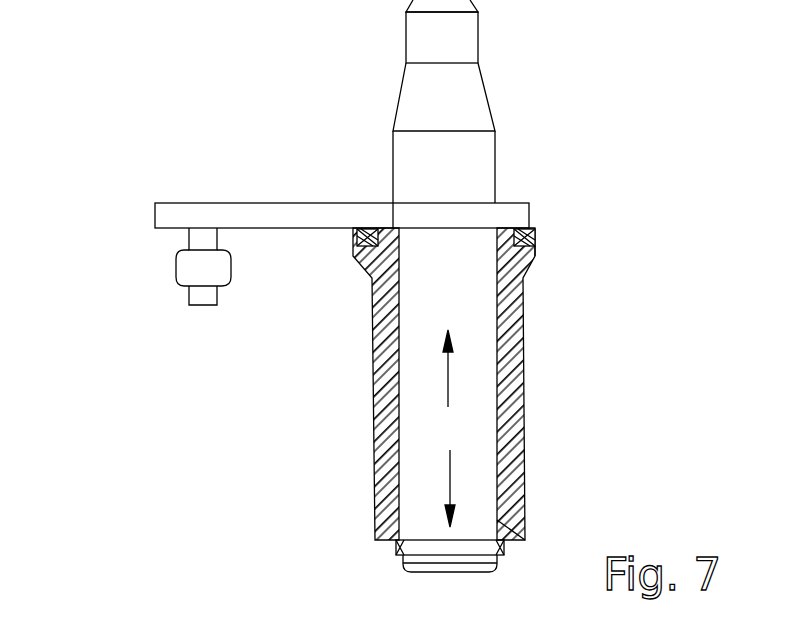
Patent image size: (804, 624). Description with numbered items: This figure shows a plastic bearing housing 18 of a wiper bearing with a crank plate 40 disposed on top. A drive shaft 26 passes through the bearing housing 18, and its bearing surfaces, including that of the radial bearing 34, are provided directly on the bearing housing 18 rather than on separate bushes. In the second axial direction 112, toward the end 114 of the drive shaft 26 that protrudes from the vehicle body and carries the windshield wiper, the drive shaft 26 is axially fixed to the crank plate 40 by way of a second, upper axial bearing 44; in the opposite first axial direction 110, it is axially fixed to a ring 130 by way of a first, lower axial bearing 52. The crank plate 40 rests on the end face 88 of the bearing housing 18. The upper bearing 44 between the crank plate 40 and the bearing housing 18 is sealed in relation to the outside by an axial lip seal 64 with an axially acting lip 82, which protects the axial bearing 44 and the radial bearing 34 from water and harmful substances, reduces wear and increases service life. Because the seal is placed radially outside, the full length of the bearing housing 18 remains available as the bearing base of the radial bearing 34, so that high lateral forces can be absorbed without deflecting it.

The end of the drive shaft 114 is at (500, 33).
The drive shaft 26 is at (473, 156).
The crank plate 40 is at (233, 216).
The axial bearing 44 is at (393, 221).
The end face of the bearing housing 88 is at (363, 240).
The axially acting lip 82 is at (536, 231).
The axial lip seal 64 is at (536, 243).
The radial bearing 34 is at (397, 410).
The bearing housing 18 is at (513, 429).
The second axial direction 112 is at (448, 385).
The first axial direction 110 is at (450, 482).
The lower axial bearing 52 is at (525, 538).
The ring 130 is at (398, 548).